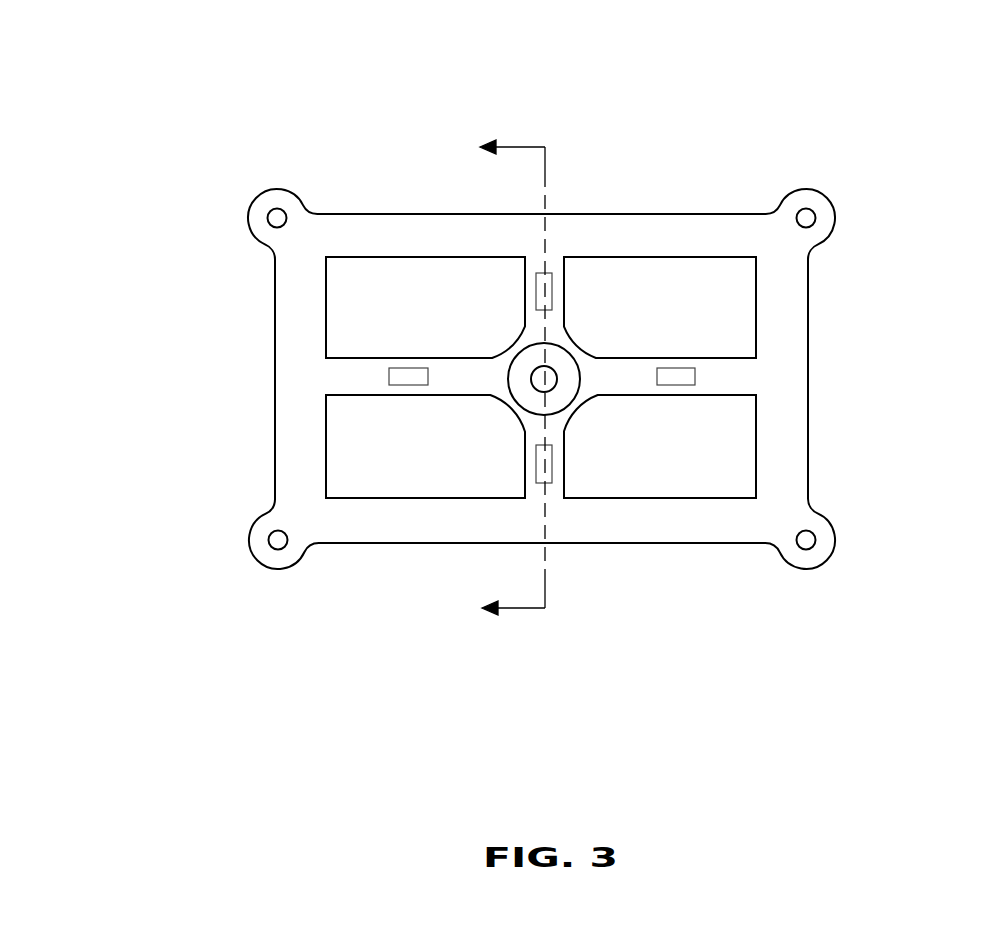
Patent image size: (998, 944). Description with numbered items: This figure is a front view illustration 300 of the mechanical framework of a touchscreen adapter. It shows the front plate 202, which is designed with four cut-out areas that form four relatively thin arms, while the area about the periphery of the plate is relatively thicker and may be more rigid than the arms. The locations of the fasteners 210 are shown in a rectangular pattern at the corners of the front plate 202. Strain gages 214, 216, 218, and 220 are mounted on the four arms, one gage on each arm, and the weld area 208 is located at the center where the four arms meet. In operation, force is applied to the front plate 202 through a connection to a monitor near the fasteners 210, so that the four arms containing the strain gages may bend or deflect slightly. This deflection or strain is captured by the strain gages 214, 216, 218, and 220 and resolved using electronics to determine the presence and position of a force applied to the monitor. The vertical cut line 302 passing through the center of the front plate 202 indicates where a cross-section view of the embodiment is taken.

The front plate 202 is at (808, 420).
The weld area 208 is at (556, 388).
The fasteners 210 is at (862, 612).
The strain gage 214 is at (389, 378).
The strain gage 216 is at (674, 367).
The strain gage 218 is at (536, 463).
The strain gage 220 is at (552, 287).
The front view illustration 300 is at (272, 688).
The cut line 302 is at (522, 147).